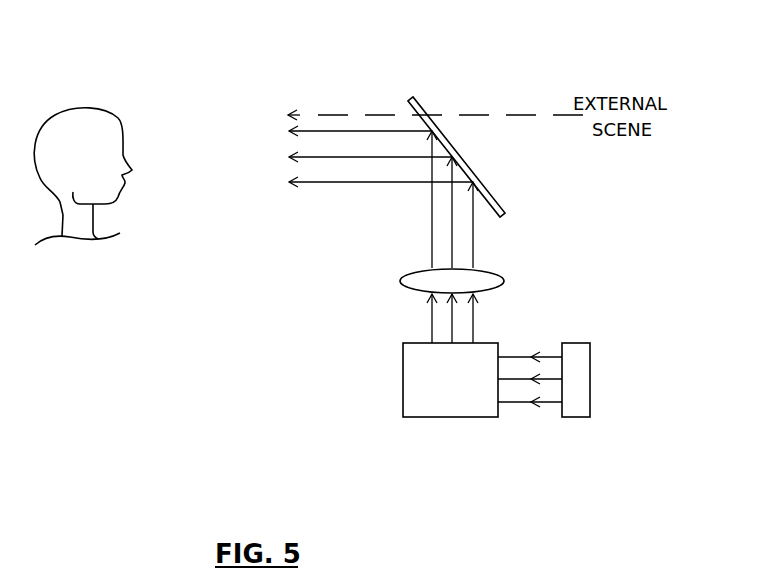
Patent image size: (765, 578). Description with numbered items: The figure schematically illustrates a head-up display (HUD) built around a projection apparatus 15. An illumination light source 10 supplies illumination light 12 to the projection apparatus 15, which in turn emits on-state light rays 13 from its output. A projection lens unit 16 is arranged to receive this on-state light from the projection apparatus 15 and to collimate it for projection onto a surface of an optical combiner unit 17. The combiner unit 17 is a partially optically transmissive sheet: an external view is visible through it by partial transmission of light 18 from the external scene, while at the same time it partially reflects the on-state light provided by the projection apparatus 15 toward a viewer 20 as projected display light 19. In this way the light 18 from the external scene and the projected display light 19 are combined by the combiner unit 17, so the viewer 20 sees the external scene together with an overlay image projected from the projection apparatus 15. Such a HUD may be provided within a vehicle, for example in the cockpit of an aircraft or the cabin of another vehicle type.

The illumination light source 10 is at (590, 368).
The light rays from light source 12 is at (520, 403).
The transmitted on-state light rays 13 is at (475, 318).
The projection apparatus 15 is at (450, 380).
The projection lens unit 16 is at (501, 275).
The optical combiner unit 17 is at (417, 100).
The light from an external scene 18 is at (341, 111).
The projected display light 19 is at (337, 138).
The viewer 20 is at (70, 238).